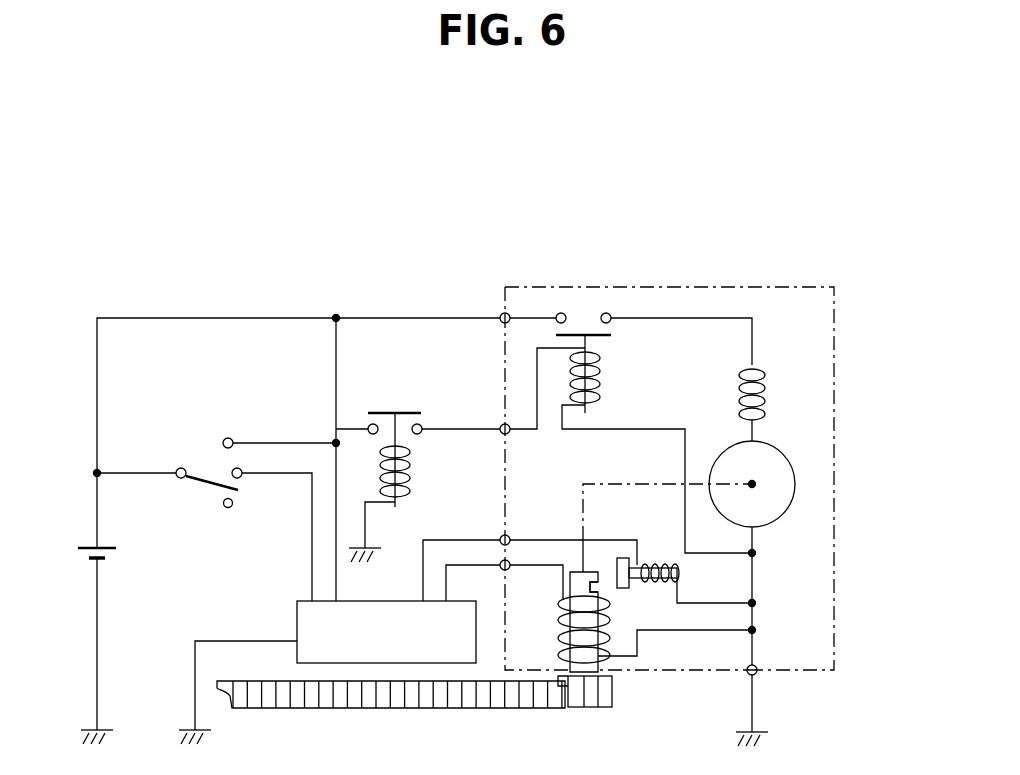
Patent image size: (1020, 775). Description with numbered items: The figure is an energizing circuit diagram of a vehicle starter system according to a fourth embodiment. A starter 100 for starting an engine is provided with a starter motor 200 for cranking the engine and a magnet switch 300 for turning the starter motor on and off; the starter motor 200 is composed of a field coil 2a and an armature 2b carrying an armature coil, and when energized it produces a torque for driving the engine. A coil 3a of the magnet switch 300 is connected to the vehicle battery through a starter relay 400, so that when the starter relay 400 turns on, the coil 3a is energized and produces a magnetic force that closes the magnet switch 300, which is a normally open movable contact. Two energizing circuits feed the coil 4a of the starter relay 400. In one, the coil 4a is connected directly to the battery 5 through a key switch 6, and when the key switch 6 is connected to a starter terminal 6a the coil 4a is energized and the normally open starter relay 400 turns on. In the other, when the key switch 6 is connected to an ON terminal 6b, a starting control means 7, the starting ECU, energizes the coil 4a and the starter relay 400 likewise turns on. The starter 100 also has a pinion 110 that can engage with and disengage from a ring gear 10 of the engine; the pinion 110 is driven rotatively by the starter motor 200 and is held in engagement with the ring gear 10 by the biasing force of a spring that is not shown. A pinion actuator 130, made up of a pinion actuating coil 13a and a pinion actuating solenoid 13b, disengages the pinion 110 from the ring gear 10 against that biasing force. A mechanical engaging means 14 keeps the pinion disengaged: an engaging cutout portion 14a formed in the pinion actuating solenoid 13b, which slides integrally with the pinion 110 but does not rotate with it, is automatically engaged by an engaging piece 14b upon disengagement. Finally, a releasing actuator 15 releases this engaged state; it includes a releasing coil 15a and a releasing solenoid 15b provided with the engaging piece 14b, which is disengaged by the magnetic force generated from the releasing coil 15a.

The starter 100 is at (744, 287).
The starter motor 200 is at (808, 420).
The magnet switch 300 is at (587, 333).
The coil of the magnet switch 3a is at (600, 378).
The starter relay 400 is at (402, 413).
The coil of the starter relay 4a is at (410, 470).
The field coil 2a is at (765, 396).
The armature 2b is at (780, 512).
The battery 5 is at (105, 548).
The key switch 6 is at (206, 484).
The starter terminal 6a is at (229, 438).
The ON terminal 6b is at (241, 468).
The starting control means 7 is at (370, 645).
The ring gear 10 is at (516, 709).
The pinion 110 is at (598, 708).
The pinion actuator 130 is at (616, 665).
The pinion actuating coil 13a is at (561, 655).
The pinion actuating solenoid 13b is at (563, 612).
The mechanical engaging means 14 is at (608, 556).
The engaging cutout portion 14a is at (599, 585).
The engaging piece 14b is at (629, 560).
The releasing actuator 15 is at (677, 560).
The releasing coil 15a is at (646, 592).
The releasing solenoid 15b is at (670, 577).